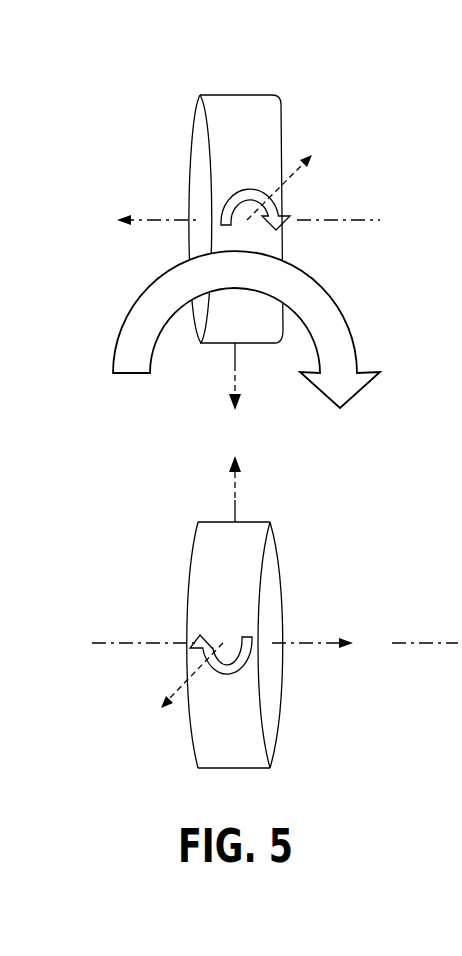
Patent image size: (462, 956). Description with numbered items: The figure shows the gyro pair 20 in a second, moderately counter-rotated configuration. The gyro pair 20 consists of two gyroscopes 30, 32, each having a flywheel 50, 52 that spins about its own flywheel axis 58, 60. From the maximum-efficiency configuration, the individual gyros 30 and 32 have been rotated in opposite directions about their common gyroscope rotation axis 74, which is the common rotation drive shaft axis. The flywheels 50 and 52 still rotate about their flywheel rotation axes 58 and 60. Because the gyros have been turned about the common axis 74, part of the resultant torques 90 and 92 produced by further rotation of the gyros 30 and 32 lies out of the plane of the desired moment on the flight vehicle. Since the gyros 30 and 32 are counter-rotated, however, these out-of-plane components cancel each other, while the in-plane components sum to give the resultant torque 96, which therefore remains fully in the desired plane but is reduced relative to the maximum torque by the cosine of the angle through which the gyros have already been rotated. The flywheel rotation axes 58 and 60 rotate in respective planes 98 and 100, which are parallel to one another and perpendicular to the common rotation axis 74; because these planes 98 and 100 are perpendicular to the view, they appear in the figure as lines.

The gyro pair 20 is at (163, 60).
The gyroscope 30 is at (280, 78).
The gyroscope 32 is at (285, 512).
The flywheel 50 is at (250, 112).
The flywheel 52 is at (223, 560).
The flywheel axis 58 is at (174, 218).
The flywheel axis 60 is at (297, 643).
The common gyroscope rotation axis 74 is at (237, 501).
The resultant torque 90 is at (288, 197).
The resultant torque 92 is at (195, 652).
The resultant torque 96 is at (322, 305).
The plane 98 is at (338, 222).
The plane 100 is at (424, 643).